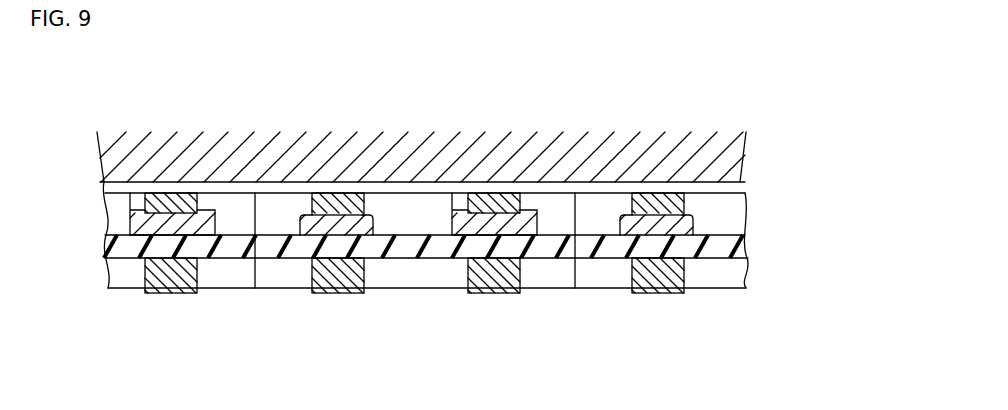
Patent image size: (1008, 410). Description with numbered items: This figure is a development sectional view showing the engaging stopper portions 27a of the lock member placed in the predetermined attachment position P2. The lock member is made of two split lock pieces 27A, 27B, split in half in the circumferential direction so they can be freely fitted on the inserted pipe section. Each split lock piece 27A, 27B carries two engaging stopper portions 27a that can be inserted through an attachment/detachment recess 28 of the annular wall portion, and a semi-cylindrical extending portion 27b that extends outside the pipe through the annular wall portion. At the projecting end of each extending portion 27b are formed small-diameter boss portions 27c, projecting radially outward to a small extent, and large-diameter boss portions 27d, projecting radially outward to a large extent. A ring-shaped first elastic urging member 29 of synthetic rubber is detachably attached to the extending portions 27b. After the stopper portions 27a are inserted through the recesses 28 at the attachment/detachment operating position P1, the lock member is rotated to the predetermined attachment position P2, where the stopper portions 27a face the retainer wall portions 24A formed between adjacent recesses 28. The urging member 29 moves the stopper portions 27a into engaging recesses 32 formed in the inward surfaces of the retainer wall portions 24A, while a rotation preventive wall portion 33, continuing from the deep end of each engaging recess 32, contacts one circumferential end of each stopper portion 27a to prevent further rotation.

The engaging stopper portion 27a is at (176, 200).
The extending portion 27b is at (713, 220).
The small-diameter boss portion 27c is at (273, 275).
The large-diameter boss portion 27d is at (182, 282).
The split lock piece 27A is at (440, 288).
The split lock piece 27B is at (605, 288).
The attachment/detachment recess 28 is at (238, 222).
The first elastic urging member 29 is at (707, 245).
The engaging recess 32 is at (156, 222).
The rotation preventive wall portion 33 is at (140, 212).
The retainer wall portion 24A is at (652, 228).
The attachment/detachment operating position P1 is at (413, 256).
The predetermined attachment position P2 is at (337, 250).